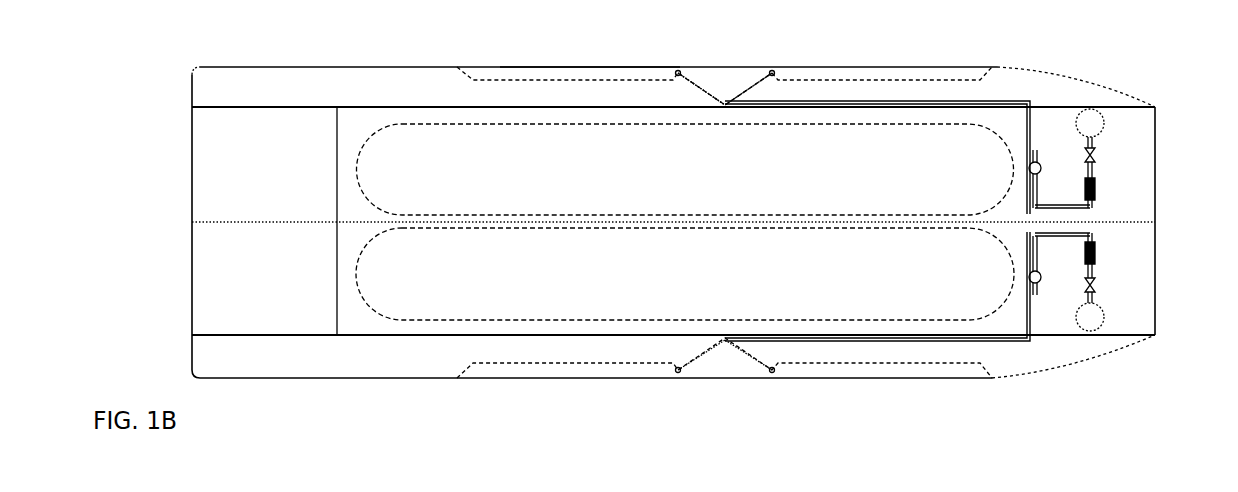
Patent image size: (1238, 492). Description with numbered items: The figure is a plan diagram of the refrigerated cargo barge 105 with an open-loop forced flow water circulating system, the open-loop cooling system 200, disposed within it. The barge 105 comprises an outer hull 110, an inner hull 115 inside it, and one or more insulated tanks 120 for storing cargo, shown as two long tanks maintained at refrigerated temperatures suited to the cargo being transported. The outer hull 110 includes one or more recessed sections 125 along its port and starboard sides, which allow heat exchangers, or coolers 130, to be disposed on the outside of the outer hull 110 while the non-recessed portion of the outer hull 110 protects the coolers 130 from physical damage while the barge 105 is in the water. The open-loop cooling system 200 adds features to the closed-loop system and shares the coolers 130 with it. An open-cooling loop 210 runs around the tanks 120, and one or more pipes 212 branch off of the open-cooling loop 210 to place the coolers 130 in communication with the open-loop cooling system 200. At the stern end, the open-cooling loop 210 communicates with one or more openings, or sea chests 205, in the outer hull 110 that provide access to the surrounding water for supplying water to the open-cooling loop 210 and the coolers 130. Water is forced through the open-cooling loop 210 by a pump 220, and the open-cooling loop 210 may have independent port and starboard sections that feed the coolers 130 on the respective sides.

The refrigerated cargo barge 105 is at (192, 272).
The outer hull 110 is at (328, 67).
The inner hull 115 is at (427, 107).
The insulated tanks 120 is at (357, 172).
The recessed sections 125 is at (493, 80).
The heat exchangers (coolers) 130 is at (580, 67).
The open-loop cooling system 200 is at (792, 53).
The openings (sea chests) 205 is at (1090, 108).
The open-cooling loop 210 is at (1018, 100).
The pipes 212 is at (758, 80).
The pump 220 is at (1041, 168).